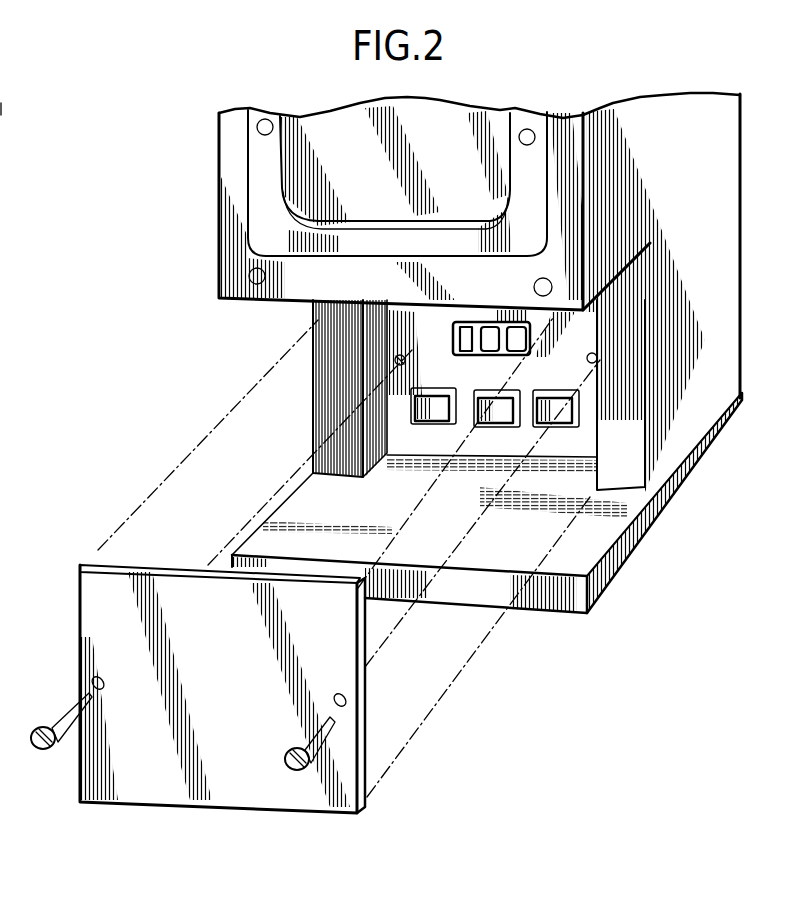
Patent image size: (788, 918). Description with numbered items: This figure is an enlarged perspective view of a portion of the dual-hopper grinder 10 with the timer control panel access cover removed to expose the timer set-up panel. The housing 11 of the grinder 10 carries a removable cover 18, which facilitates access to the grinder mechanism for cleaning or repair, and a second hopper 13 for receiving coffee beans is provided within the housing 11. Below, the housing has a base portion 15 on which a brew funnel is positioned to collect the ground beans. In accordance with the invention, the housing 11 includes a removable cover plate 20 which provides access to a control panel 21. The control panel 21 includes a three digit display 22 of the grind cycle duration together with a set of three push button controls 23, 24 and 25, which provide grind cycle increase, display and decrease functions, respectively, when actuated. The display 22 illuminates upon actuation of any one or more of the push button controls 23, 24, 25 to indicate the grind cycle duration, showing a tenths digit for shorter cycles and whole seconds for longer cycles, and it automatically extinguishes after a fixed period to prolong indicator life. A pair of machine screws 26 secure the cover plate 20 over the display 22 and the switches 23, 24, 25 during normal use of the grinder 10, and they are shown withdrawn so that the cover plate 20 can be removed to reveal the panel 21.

The dual-hopper grinder 10 is at (208, 160).
The housing 11 is at (712, 162).
The second hopper 13 is at (0, 237).
The base portion 15 is at (577, 563).
The removable cover 18 is at (263, 207).
The removable cover plate 20 is at (98, 602).
The control panel 21 is at (577, 443).
The three digit display 22 is at (468, 322).
The push button control 23 is at (418, 425).
The push button control 24 is at (482, 427).
The push button control 25 is at (550, 433).
The machine screws 26 is at (50, 757).